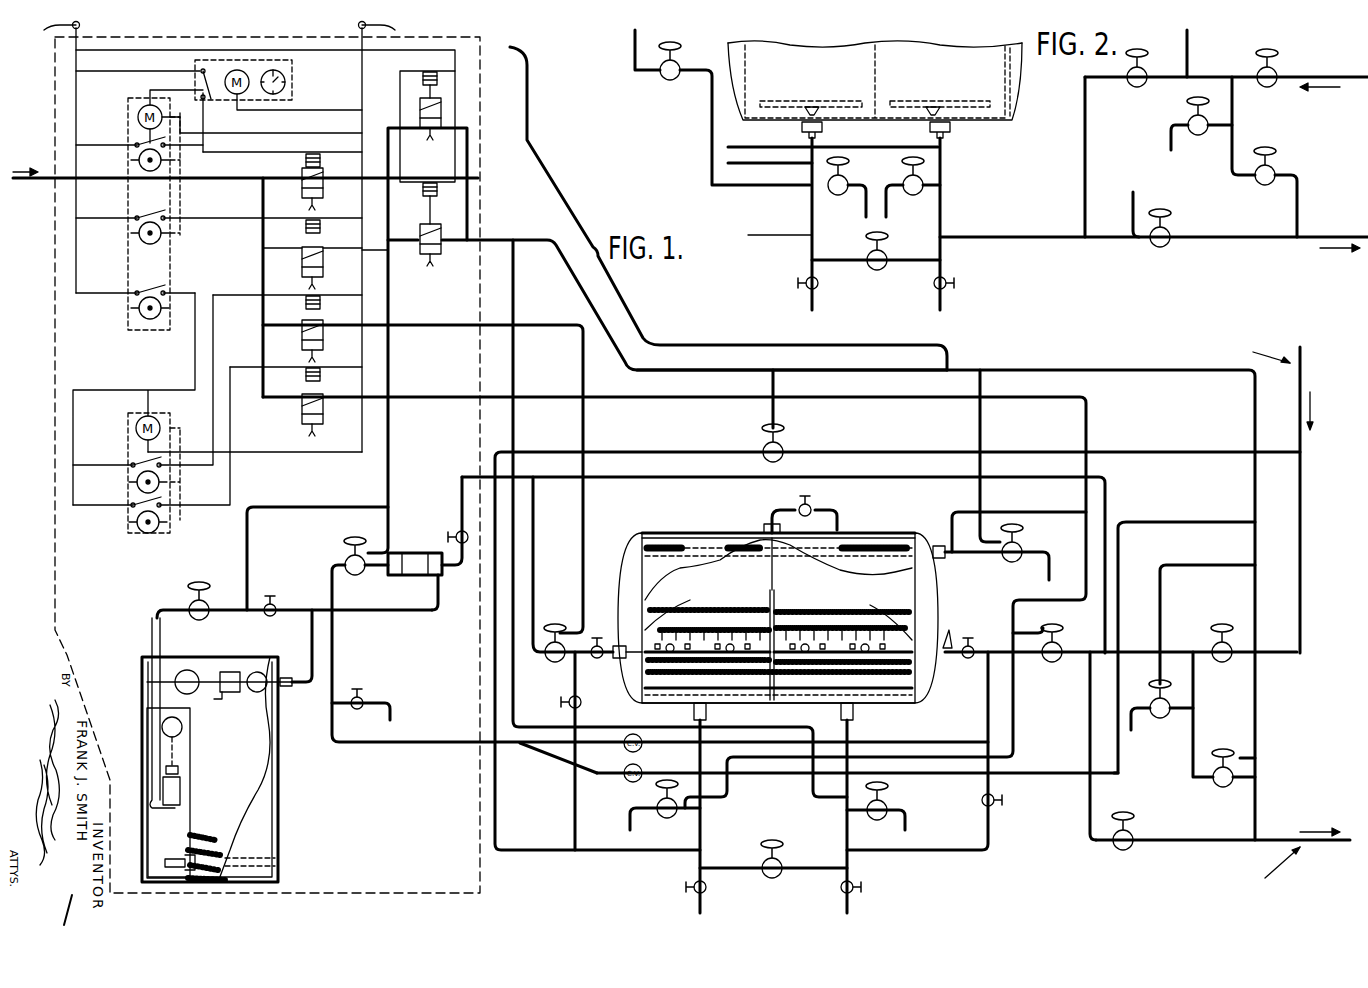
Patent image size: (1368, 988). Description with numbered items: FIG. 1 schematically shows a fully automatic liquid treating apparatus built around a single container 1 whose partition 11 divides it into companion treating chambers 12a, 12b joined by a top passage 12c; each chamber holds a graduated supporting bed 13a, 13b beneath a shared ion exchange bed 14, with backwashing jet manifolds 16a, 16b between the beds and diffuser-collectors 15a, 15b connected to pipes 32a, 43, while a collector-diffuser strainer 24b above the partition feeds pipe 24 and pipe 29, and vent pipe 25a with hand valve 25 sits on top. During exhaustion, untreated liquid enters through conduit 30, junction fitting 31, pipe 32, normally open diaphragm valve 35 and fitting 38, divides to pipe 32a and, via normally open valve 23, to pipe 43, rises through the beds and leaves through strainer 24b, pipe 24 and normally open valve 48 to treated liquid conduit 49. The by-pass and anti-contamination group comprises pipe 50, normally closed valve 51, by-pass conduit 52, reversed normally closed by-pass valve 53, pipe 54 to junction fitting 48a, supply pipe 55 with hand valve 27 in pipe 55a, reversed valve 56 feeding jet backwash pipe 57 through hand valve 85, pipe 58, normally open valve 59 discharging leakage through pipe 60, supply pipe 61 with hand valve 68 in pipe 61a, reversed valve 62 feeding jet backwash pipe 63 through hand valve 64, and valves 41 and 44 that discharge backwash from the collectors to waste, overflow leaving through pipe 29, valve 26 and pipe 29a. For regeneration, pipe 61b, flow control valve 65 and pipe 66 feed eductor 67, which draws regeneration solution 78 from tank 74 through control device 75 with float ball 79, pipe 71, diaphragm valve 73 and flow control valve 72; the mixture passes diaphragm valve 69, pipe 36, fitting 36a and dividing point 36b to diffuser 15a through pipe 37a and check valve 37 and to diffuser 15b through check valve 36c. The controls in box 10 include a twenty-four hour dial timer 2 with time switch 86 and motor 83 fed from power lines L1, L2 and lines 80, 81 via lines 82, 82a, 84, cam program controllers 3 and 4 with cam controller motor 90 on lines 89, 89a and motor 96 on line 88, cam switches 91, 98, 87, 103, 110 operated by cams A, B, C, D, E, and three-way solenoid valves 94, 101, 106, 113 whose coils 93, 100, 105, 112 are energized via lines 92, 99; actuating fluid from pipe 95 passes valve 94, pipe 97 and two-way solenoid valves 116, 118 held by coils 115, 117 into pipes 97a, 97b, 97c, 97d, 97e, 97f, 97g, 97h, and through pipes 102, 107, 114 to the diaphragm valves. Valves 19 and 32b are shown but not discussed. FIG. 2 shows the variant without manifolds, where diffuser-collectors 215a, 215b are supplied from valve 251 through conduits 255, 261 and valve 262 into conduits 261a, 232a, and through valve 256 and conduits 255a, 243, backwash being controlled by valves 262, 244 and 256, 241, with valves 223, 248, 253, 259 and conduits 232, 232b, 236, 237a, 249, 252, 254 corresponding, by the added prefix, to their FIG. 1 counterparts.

In FIG. 1, the container 1 is at (692, 530).
In FIG. 1, the dial timer 2 is at (297, 68).
In FIG. 1, the cam program controller 3 is at (124, 258).
In FIG. 1, the cam program controller 4 is at (180, 416).
In FIG. 1, the box 10 is at (486, 207).
In FIG. 1, the partition 11 is at (776, 610).
In FIG. 1, the treating chamber 12a is at (694, 590).
In FIG. 1, the treating chamber 12b is at (856, 582).
In FIG. 1, the top passage 12c is at (772, 564).
In FIG. 1, the graduated bed of particulate supporting material 13a is at (644, 688).
In FIG. 1, the graduated bed of particulate supporting material 13b is at (915, 679).
In FIG. 1, the bed of ion exchange liquid treating material 14 is at (758, 580).
In FIG. 1, the liquid diffuser and collector 15a is at (708, 652).
In FIG. 1, the liquid diffuser and collector 15b is at (833, 652).
In FIG. 1, the multiple nozzle backwashing manifold 16a is at (718, 642).
In FIG. 1, the multiple nozzle backwashing manifold 16b is at (864, 640).
In FIG. 1, the valve 19 is at (363, 700).
In FIG. 1, the normally open diaphragm valve 23 is at (780, 862).
In FIG. 1, the pipe 24 is at (950, 522).
In FIG. 1, the collector-diffuser strainer 24b is at (860, 543).
In FIG. 1, the hand operated valve 25 is at (814, 505).
In FIG. 1, the pipe 25a is at (778, 513).
In FIG. 1, the normally closed diaphragm valve 26 is at (1021, 548).
In FIG. 1, the hand control valve 27 is at (994, 812).
In FIG. 1, the pipe 29 is at (972, 554).
In FIG. 1, the pipe 29a is at (1043, 568).
In FIG. 1, the untreated liquid conduit 30 is at (1300, 357).
In FIG. 1, the junction fitting 31 is at (1308, 453).
In FIG. 1, the pipe 32 is at (530, 850).
In FIG. 1, the pipe 32a is at (692, 717).
In FIG. 1, the valve 32b is at (773, 886).
In FIG. 1, the normally open diaphragm valve 35 is at (784, 447).
In FIG. 1, the pipe 36 is at (346, 648).
In FIG. 1, the fitting 36a is at (885, 743).
In FIG. 1, the flow dividing point 36b is at (528, 746).
In FIG. 1, the check valve 36c is at (640, 749).
In FIG. 1, the check valve 37 is at (614, 769).
In FIG. 1, the pipe 37a is at (625, 778).
In FIG. 1, the fitting 38 is at (700, 850).
In FIG. 1, the diaphragm valve 41 is at (658, 802).
In FIG. 1, the pipe 43 is at (855, 720).
In FIG. 1, the diaphragm valve 44 is at (887, 805).
In FIG. 1, the normally open diaphragm valve 48 is at (1133, 834).
In FIG. 1, the junction fitting 48a is at (1215, 856).
In FIG. 1, the treated liquid conduit 49 is at (1330, 842).
In FIG. 1, the pipe 50 is at (1300, 573).
In FIG. 1, the normally closed pressure actuated diaphragm valve 51 is at (1215, 647).
In FIG. 1, the by-pass conduit 52 is at (1196, 693).
In FIG. 1, the by-pass valve 53 is at (1211, 782).
In FIG. 1, the pipe 54 is at (1257, 807).
In FIG. 1, the untreated liquid supply pipe 55 is at (1134, 654).
In FIG. 1, the pipe 55a is at (935, 850).
In FIG. 1, the normally closed diaphragm valve 56 is at (1056, 648).
In FIG. 1, the jet backwash pipe 57 is at (1120, 630).
In FIG. 1, the pipe 58 is at (1162, 704).
In FIG. 1, the normally open diaphragm valve 59 is at (1150, 704).
In FIG. 1, the pipe 60 is at (1134, 730).
In FIG. 1, the untreated liquid supply pipe 61 is at (1108, 494).
In FIG. 1, the pipe 61a is at (575, 814).
In FIG. 1, the pipe 61b is at (460, 480).
In FIG. 1, the normally closed diaphragm valve 62 is at (535, 664).
In FIG. 1, the jet backwash pipe 63 is at (590, 642).
In FIG. 1, the hand valve 64 is at (616, 653).
In FIG. 1, the hand operated flow control valve 65 is at (458, 532).
In FIG. 1, the pipe 66 is at (453, 580).
In FIG. 1, the eductor 67 is at (420, 575).
In FIG. 1, the hand valve 68 is at (580, 708).
In FIG. 1, the diaphragm valve 69 is at (350, 555).
In FIG. 1, the pipe 71 is at (427, 613).
In FIG. 1, the hand operated flow control valve 72 is at (282, 590).
In FIG. 1, the diaphragm valve 73 is at (192, 600).
In FIG. 1, the tank 74 is at (274, 798).
In FIG. 1, the controller 75 is at (172, 810).
In FIG. 1, the liquid regeneration solution 78 is at (175, 666).
In FIG. 1, the float ball 79 is at (178, 765).
In FIG. 1, the power line 80 is at (76, 88).
In FIG. 1, the power line 81 is at (300, 468).
In FIG. 1, the line 82 is at (140, 73).
In FIG. 1, the line 82a is at (196, 71).
In FIG. 1, the time switch motor 83 is at (237, 100).
In FIG. 1, the line 84 is at (332, 110).
In FIG. 1, the hand control valve 85 is at (975, 644).
In FIG. 1, the time switch 86 is at (199, 85).
In FIG. 1, the cam switch 87 is at (135, 275).
In FIG. 1, the line 88 is at (195, 332).
In FIG. 1, the line 89 is at (150, 90).
In FIG. 1, the line 89a is at (285, 133).
In FIG. 1, the cam controller motor 90 is at (138, 106).
In FIG. 1, the cam switch 91 is at (137, 145).
In FIG. 1, the line 92 is at (333, 156).
In FIG. 1, the coil 93 is at (306, 163).
In FIG. 1, the three-way solenoid valve 94 is at (323, 190).
In FIG. 1, the pipe 95 is at (263, 342).
In FIG. 1, the motor 96 is at (135, 430).
In FIG. 1, the pipe 97 is at (370, 184).
In FIG. 1, the pipe 97a is at (565, 300).
In FIG. 1, the pipe 97b is at (776, 386).
In FIG. 1, the pipe 97c is at (1170, 522).
In FIG. 1, the pipe 97d is at (1197, 565).
In FIG. 1, the pipe 97e is at (1253, 640).
In FIG. 1, the pipe 97f is at (1260, 715).
In FIG. 1, the pipe 97g is at (1037, 773).
In FIG. 1, the pipe 97h is at (981, 432).
In FIG. 1, the cam switch 98 is at (150, 202).
In FIG. 1, the line 99 is at (120, 215).
In FIG. 1, the coil 100 is at (306, 234).
In FIG. 1, the three-way solenoid valve 101 is at (323, 260).
In FIG. 1, the pipe 102 is at (248, 543).
In FIG. 1, the switch 103 is at (145, 382).
In FIG. 1, the coil 105 is at (306, 308).
In FIG. 1, the three-way solenoid valve 106 is at (323, 334).
In FIG. 1, the pipe 107 is at (782, 732).
In FIG. 1, the switch 110 is at (171, 500).
In FIG. 1, the coil 112 is at (306, 382).
In FIG. 1, the three-way solenoid valve 113 is at (302, 424).
In FIG. 1, the pipe 114 is at (1018, 713).
In FIG. 1, the coil 115 is at (427, 111).
In FIG. 1, the two-way normally closed solenoid valve 116 is at (427, 197).
In FIG. 1, the coil 117 is at (420, 200).
In FIG. 1, the two-way normally closed solenoid valve 118 is at (430, 256).
In FIG. 1, the cam A is at (139, 160).
In FIG. 1, the pressure switch B is at (139, 235).
In FIG. 1, the cam C is at (139, 310).
In FIG. 1, the cam D is at (137, 482).
In FIG. 1, the cam E is at (137, 524).
In FIG. 1, the power line L1 is at (49, 155).
In FIG. 1, the power line L2 is at (388, 234).
In FIG. 2, the diffuser-collector 215a is at (808, 100).
In FIG. 2, the diffuser-collector 215b is at (937, 100).
In FIG. 2, the valve 223 is at (887, 257).
In FIG. 2, the pipe 232 is at (770, 226).
In FIG. 2, the conduit 232a is at (826, 144).
In FIG. 2, the pipe 232b is at (822, 260).
In FIG. 2, the pipe 236 is at (782, 147).
In FIG. 2, the pipe 237a is at (787, 173).
In FIG. 2, the valve 241 is at (838, 195).
In FIG. 2, the conduit 243 is at (971, 145).
In FIG. 2, the valve 244 is at (913, 195).
In FIG. 2, the valve 248 is at (1168, 235).
In FIG. 2, the outlet pipe 249 is at (1318, 248).
In FIG. 2, the valve 251 is at (1277, 72).
In FIG. 2, the pipe 252 is at (1277, 114).
In FIG. 2, the valve 253 is at (1253, 179).
In FIG. 2, the pipe 254 is at (1297, 203).
In FIG. 2, the conduit 255 is at (1225, 66).
In FIG. 2, the conduit 255a is at (1085, 155).
In FIG. 2, the valve 256 is at (1148, 65).
In FIG. 2, the valve 259 is at (1188, 123).
In FIG. 2, the conduit 261 is at (1187, 40).
In FIG. 2, the conduit 261a is at (592, 150).
In FIG. 2, the valve 262 is at (660, 78).